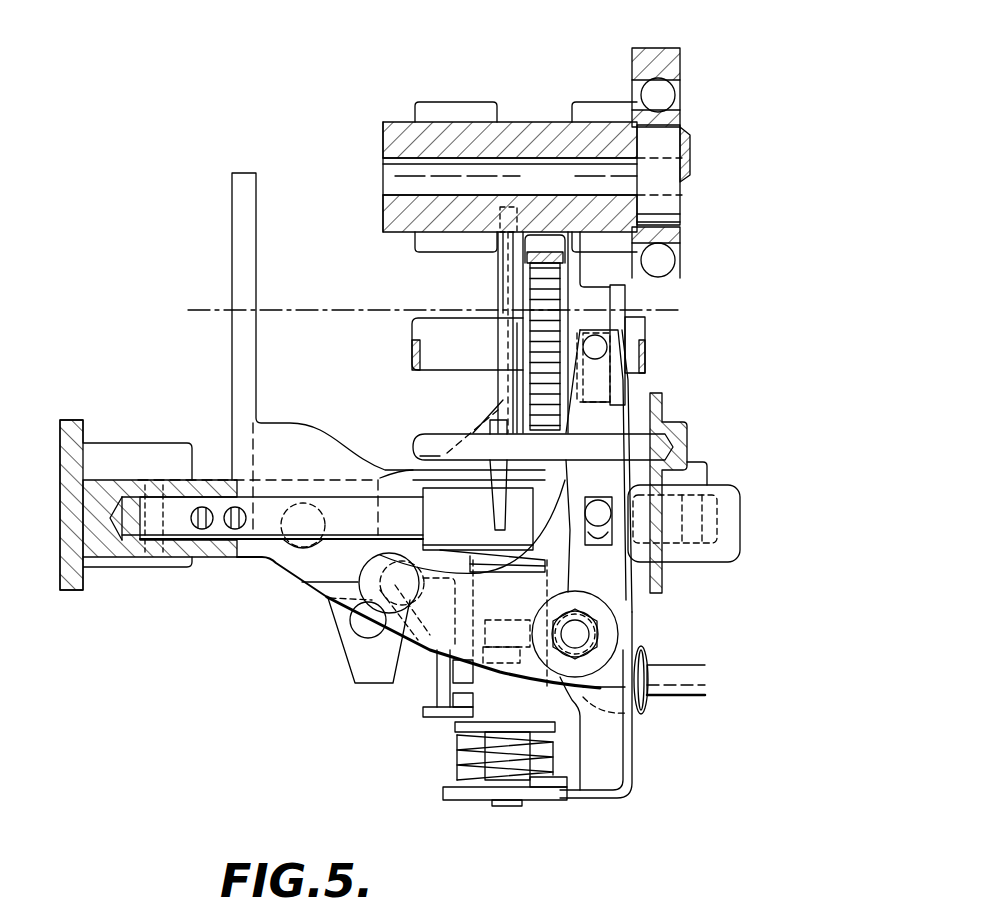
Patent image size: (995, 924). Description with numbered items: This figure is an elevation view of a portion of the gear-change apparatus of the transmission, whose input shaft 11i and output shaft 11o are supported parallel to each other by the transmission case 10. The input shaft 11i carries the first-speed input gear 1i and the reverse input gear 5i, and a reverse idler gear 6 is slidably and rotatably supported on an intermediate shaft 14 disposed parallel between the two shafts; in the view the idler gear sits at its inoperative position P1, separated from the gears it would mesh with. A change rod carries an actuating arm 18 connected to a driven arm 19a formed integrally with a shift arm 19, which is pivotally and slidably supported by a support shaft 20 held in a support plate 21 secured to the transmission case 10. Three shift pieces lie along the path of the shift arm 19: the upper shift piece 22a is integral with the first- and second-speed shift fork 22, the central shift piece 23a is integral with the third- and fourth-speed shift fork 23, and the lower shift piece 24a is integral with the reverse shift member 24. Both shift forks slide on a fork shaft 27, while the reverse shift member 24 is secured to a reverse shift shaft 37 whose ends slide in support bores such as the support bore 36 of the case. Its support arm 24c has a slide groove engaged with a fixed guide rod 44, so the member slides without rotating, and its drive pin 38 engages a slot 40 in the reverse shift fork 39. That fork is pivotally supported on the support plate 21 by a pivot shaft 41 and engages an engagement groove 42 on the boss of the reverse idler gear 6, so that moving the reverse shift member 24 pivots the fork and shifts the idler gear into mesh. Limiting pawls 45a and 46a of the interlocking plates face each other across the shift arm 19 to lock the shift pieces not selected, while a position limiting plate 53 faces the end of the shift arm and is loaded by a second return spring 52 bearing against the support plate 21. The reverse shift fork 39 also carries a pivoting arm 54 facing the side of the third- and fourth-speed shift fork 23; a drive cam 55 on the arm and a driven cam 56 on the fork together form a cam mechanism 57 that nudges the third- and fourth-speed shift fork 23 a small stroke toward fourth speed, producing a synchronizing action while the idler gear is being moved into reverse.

The inoperative position P1 is at (545, 230).
The first-speed input gear 1i is at (598, 110).
The reverse input gear 5i is at (445, 112).
The input shaft 11i is at (385, 160).
The output shaft 11o is at (208, 312).
The reverse idler gear 6 is at (530, 287).
The engagement groove 42 is at (612, 318).
The intermediate shaft 14 is at (412, 346).
The first- and second-speed shift fork 22 is at (503, 403).
The fixed guide rod 44 is at (428, 440).
The reverse shift fork 39 is at (606, 410).
The slot 40 is at (603, 547).
The drive pin 38 is at (599, 500).
The transmission case 10 is at (675, 443).
The support bore 36 is at (140, 545).
The third- and fourth-speed shift fork 23 is at (250, 340).
The fork shaft 27 is at (278, 480).
The reverse shift shaft 37 is at (358, 524).
The reverse shift member 24 is at (456, 534).
The support arm 24c is at (490, 500).
The pivoting arm 54 is at (368, 575).
The drive cam 55 is at (347, 598).
The driven cam 56 is at (360, 628).
The cam mechanism 57 is at (290, 605).
The limiting pawl 45a is at (506, 620).
The upper shift piece 22a is at (452, 672).
The central shift piece 23a is at (456, 696).
The lower shift piece 24a is at (442, 715).
The limiting pawl 46a is at (470, 747).
The position limiting plate 53 is at (478, 762).
The second return spring 52 is at (562, 781).
The support shaft 20 is at (512, 790).
The support plate 21 is at (627, 781).
The shift arm 19 is at (579, 716).
The pivot shaft 41 is at (583, 630).
The actuating arm 18 is at (668, 674).
The driven arm 19a is at (642, 708).